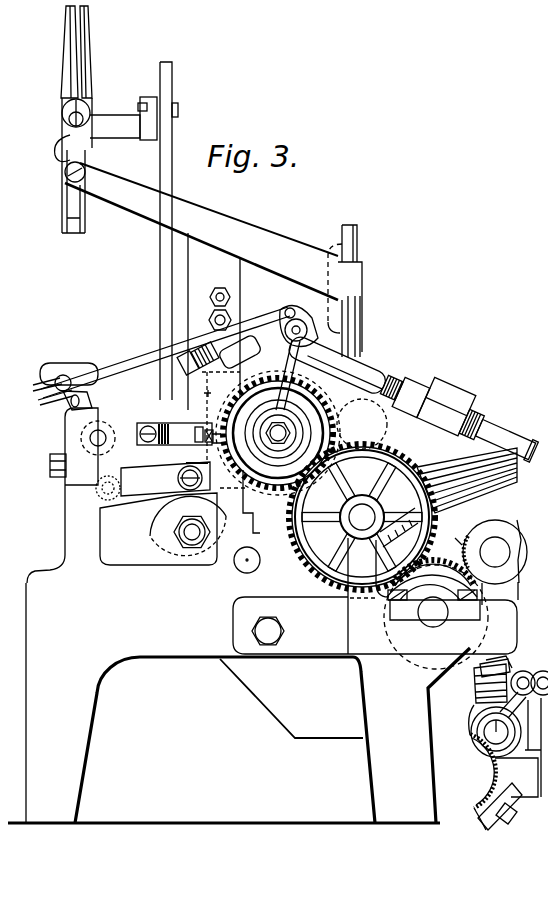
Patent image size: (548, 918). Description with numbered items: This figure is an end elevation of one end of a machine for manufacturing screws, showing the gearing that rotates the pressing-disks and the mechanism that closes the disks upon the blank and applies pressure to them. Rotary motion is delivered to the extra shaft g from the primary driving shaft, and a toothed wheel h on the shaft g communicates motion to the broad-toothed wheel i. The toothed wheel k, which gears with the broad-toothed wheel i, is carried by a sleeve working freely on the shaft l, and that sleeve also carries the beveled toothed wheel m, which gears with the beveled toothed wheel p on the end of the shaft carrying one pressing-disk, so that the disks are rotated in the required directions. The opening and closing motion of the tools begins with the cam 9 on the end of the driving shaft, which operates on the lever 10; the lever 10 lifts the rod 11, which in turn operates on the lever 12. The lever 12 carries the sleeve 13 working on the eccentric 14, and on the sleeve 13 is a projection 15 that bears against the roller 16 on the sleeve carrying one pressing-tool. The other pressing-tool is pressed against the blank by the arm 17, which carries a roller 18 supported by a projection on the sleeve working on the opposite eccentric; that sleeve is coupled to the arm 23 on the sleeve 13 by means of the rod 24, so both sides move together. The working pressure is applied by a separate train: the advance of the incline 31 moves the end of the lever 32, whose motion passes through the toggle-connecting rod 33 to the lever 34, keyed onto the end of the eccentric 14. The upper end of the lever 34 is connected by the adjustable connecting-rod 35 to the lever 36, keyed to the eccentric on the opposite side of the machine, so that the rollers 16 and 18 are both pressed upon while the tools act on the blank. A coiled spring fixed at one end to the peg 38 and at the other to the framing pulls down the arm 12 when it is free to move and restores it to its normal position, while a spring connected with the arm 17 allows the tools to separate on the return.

The cam 9 is at (150, 532).
The lever 10 is at (165, 479).
The rod 11 is at (217, 430).
The lever 12 is at (190, 380).
The sleeve 13 is at (278, 433).
The eccentric 14 is at (240, 352).
The projection 15 is at (412, 398).
The roller 16 is at (278, 433).
The arm 17 is at (476, 692).
The roller 18 is at (506, 661).
The arm 23 is at (283, 358).
The rod 24 is at (392, 452).
The incline 31 is at (110, 438).
The lever 32 is at (179, 434).
The toggle-connecting rod 33 is at (197, 455).
The lever 34 is at (278, 433).
The adjustable connecting-rod 35 is at (452, 384).
The lever 36 is at (497, 727).
The peg 38 is at (209, 348).
The beveled toothed wheel p is at (253, 521).
The shaft l is at (362, 517).
The beveled toothed wheel m is at (399, 532).
The toothed wheel k is at (451, 533).
The broad-toothed wheel i is at (436, 609).
The toothed wheel h is at (481, 773).
The extra shaft g is at (495, 552).